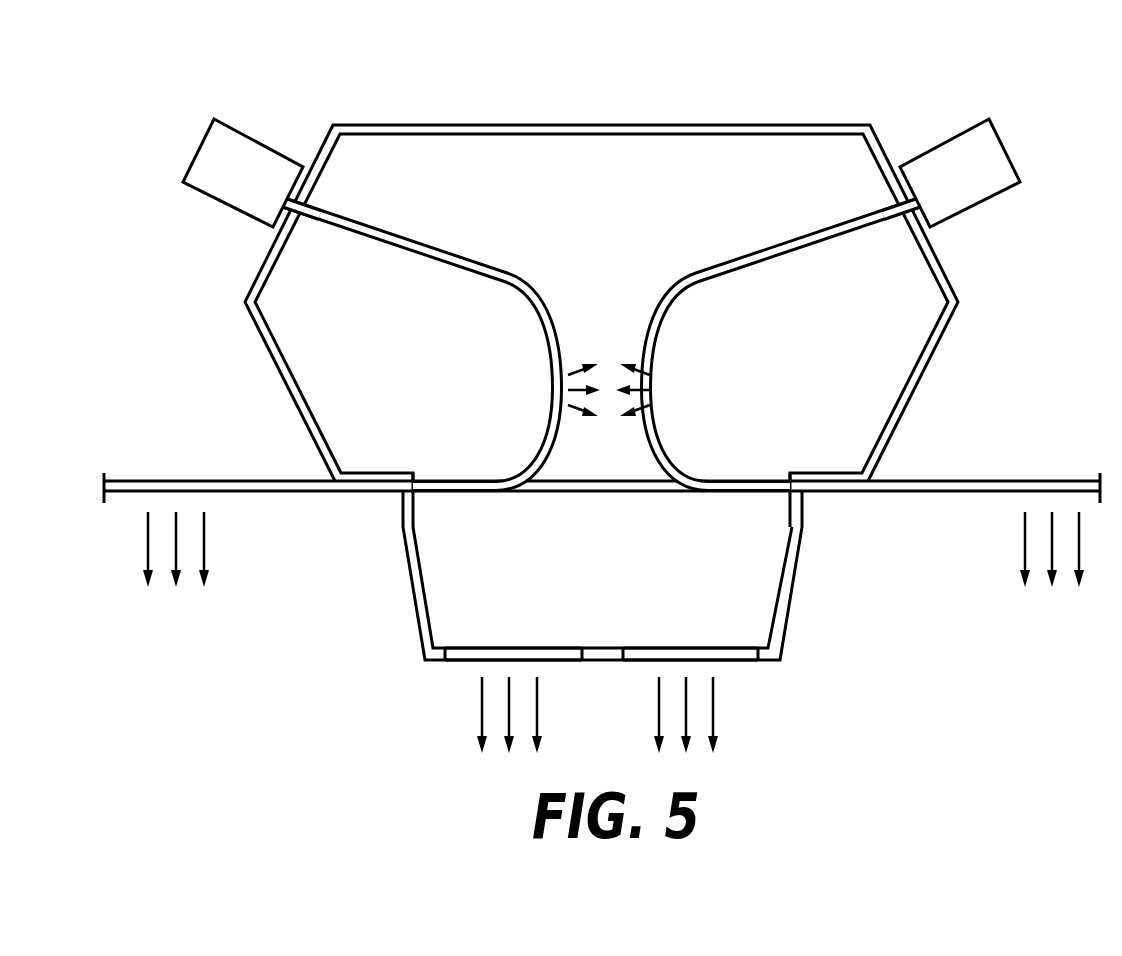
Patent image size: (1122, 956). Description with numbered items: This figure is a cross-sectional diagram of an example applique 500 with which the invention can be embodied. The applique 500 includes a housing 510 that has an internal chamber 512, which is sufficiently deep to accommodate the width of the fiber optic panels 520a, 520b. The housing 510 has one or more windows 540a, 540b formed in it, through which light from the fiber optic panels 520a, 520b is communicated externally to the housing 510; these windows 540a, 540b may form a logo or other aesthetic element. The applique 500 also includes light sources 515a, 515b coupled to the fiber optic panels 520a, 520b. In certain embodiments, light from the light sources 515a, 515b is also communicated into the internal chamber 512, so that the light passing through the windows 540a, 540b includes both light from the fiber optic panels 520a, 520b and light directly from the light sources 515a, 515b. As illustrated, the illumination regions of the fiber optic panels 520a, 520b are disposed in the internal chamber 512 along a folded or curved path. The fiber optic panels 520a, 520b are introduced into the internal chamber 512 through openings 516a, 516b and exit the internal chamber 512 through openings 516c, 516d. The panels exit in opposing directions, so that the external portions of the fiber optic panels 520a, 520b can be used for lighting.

The applique 500 is at (228, 84).
The housing 510 is at (592, 124).
The internal chamber 512 is at (367, 359).
The light source 515a is at (203, 162).
The light source 515b is at (993, 165).
The opening 516a is at (302, 214).
The opening 516b is at (900, 214).
The opening 516c is at (415, 492).
The opening 516d is at (790, 493).
The fiber optic panel 520a is at (450, 264).
The fiber optic panel 520b is at (785, 252).
The window 540a is at (533, 648).
The window 540b is at (700, 648).